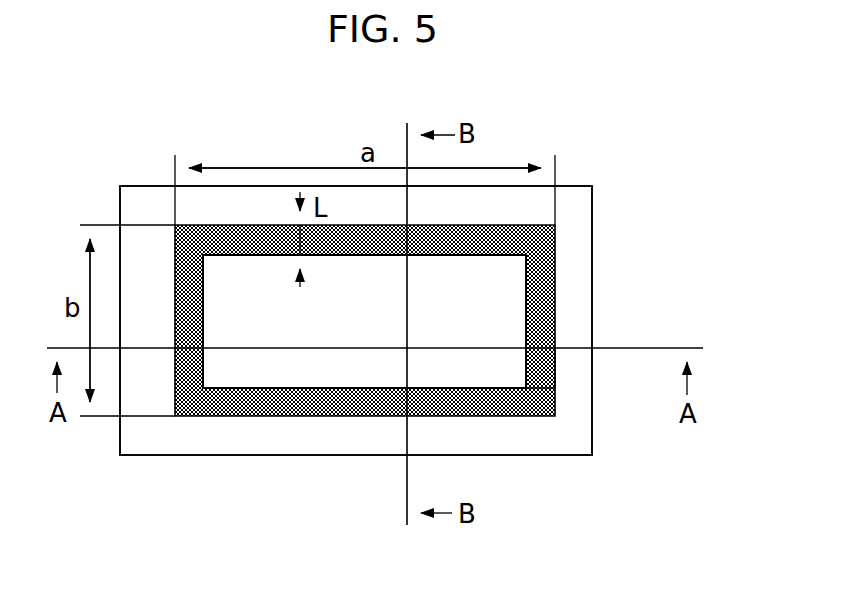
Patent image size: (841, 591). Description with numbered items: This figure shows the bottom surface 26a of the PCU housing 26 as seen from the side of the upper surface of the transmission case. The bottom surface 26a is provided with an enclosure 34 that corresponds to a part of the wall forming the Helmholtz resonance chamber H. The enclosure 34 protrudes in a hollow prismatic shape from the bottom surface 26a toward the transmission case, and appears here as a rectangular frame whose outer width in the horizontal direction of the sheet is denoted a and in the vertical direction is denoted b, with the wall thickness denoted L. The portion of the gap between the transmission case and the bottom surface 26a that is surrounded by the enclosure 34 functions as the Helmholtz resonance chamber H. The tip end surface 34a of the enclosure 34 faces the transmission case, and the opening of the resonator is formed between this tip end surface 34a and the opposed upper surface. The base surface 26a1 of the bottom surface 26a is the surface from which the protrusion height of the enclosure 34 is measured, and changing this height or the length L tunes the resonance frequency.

The PCU housing 26 is at (596, 245).
The bottom surface 26a is at (533, 207).
The base surface 26a1 is at (280, 367).
The enclosure 34 is at (562, 303).
The tip end surface 34a is at (535, 380).
The Helmholtz resonance chamber H is at (462, 368).